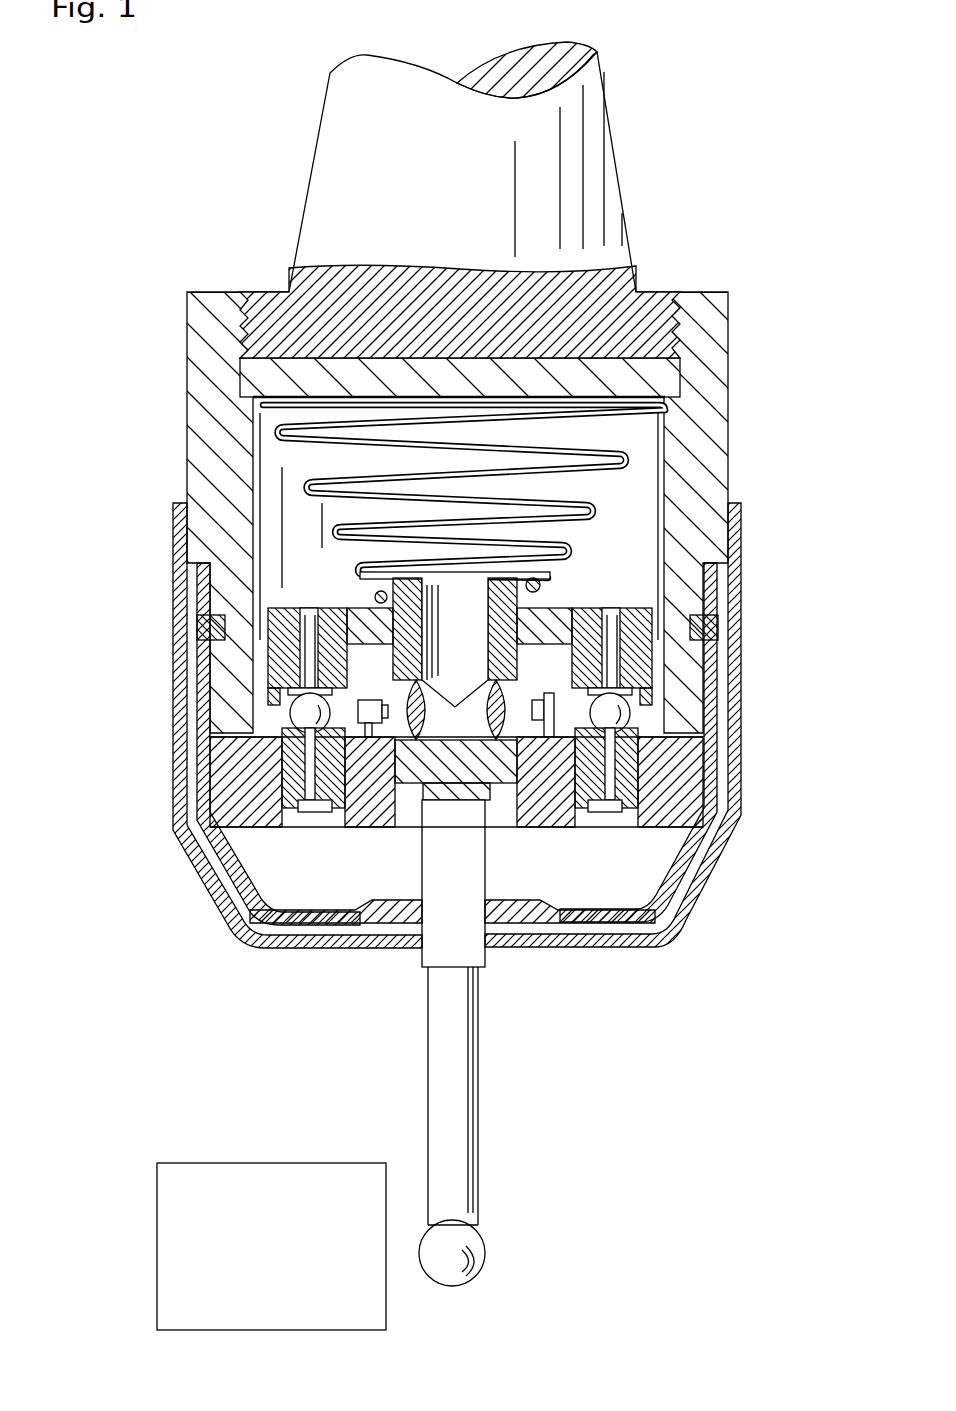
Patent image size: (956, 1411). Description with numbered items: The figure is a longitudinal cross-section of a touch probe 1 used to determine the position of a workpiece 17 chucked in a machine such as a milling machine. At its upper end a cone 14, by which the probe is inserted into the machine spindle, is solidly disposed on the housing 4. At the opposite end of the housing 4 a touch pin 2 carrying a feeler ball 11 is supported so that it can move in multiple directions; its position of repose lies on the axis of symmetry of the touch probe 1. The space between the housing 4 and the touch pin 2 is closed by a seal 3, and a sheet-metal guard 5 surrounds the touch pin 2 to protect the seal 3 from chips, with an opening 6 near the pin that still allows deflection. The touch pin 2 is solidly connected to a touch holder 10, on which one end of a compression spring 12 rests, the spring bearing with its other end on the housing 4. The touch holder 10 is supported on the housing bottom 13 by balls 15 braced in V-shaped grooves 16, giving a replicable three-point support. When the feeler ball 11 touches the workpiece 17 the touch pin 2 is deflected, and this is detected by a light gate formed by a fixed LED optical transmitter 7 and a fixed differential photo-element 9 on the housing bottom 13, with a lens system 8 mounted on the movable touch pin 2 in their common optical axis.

The touch probe 1 is at (124, 345).
The touch pin 2 is at (460, 1098).
The seal 3 is at (683, 935).
The housing 4 is at (724, 450).
The sheet-metal guard 5 is at (700, 895).
The opening 6 is at (408, 935).
The optical transmitter 7 is at (350, 690).
The lens system 8 is at (508, 700).
The differential photo-element 9 is at (640, 790).
The touch holder 10 is at (360, 620).
The feeler ball 11 is at (478, 1257).
The compression spring 12 is at (580, 510).
The housing bottom 13 is at (173, 832).
The cone 14 is at (596, 137).
The balls 15 is at (622, 697).
The V-shaped grooves 16 is at (547, 717).
The workpiece 17 is at (373, 1310).